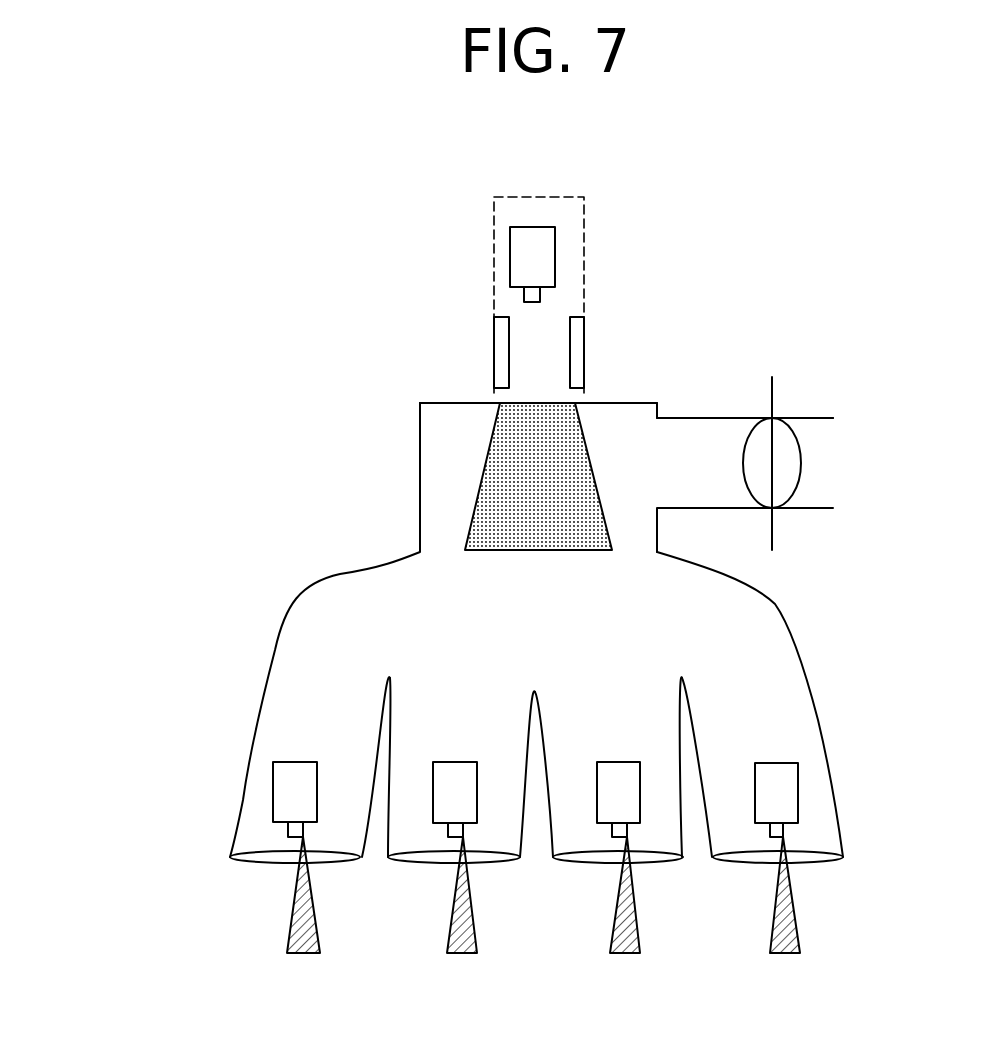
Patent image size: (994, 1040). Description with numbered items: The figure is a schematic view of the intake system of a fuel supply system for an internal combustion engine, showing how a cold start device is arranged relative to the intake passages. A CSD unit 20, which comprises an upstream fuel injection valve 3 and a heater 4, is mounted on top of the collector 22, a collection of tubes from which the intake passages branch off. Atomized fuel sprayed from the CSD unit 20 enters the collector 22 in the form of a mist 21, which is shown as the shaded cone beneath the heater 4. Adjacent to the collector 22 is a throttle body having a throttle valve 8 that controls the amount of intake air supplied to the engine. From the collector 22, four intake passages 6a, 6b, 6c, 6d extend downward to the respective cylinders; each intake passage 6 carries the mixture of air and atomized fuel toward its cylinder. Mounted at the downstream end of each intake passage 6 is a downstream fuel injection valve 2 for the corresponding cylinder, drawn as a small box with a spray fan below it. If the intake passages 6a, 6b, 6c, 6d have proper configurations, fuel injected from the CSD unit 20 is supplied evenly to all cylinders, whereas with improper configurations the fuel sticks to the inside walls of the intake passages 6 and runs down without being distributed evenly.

The downstream fuel injection valve 2 is at (455, 780).
The upstream fuel injection valve 3 is at (540, 247).
The heater 4 is at (508, 358).
The intake passage 6 is at (700, 495).
The intake passage 6a is at (313, 703).
The intake passage 6b is at (460, 705).
The intake passage 6c is at (610, 697).
The intake passage 6d is at (755, 697).
The throttle valve 8 is at (788, 467).
The CSD unit 20 is at (595, 291).
The mist 21 is at (480, 485).
The collector 22 is at (627, 420).